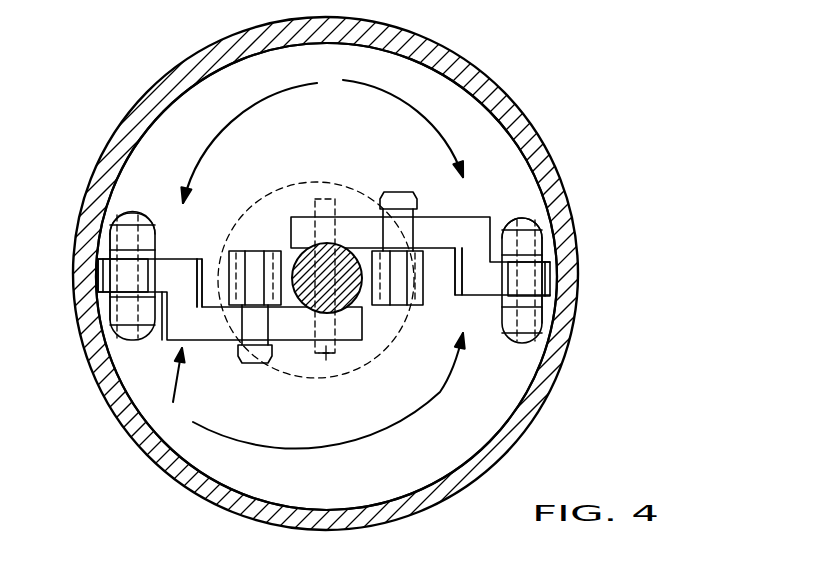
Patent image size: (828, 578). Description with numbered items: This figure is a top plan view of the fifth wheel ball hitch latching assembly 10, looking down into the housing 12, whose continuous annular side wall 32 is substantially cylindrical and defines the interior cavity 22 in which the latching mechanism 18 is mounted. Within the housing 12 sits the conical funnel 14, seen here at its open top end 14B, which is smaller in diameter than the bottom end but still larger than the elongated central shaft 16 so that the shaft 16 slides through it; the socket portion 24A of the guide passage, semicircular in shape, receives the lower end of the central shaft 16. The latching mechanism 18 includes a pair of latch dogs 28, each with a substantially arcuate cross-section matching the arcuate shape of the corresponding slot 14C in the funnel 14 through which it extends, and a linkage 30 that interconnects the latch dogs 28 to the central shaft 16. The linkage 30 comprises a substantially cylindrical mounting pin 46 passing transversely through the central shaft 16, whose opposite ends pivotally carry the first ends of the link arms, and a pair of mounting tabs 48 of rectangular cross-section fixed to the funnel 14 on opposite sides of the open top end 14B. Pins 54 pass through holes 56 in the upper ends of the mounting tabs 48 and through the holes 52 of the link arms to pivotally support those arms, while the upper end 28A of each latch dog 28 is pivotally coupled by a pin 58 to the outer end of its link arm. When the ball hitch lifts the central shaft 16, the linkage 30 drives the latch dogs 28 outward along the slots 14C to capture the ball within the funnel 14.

The fifth wheel ball hitch latching assembly 10 is at (570, 118).
The housing 12 is at (468, 57).
The funnel 14 is at (326, 276).
The open top end 14B is at (345, 246).
The slots 14C is at (105, 314).
The central shaft 16 is at (355, 304).
The latching mechanism 18 is at (323, 137).
The interior cavity 22 is at (494, 428).
The socket portion 24A is at (317, 182).
The latch dogs 28 is at (133, 340).
The upper end 28A is at (152, 250).
The linkage 30 is at (311, 391).
The annular side wall 32 is at (563, 335).
The mounting pin 46 is at (325, 358).
The mounting tabs 48 is at (272, 250).
The hole 52 is at (414, 238).
The pins 54 is at (410, 197).
The holes 56 is at (228, 252).
The pin 58 is at (142, 307).